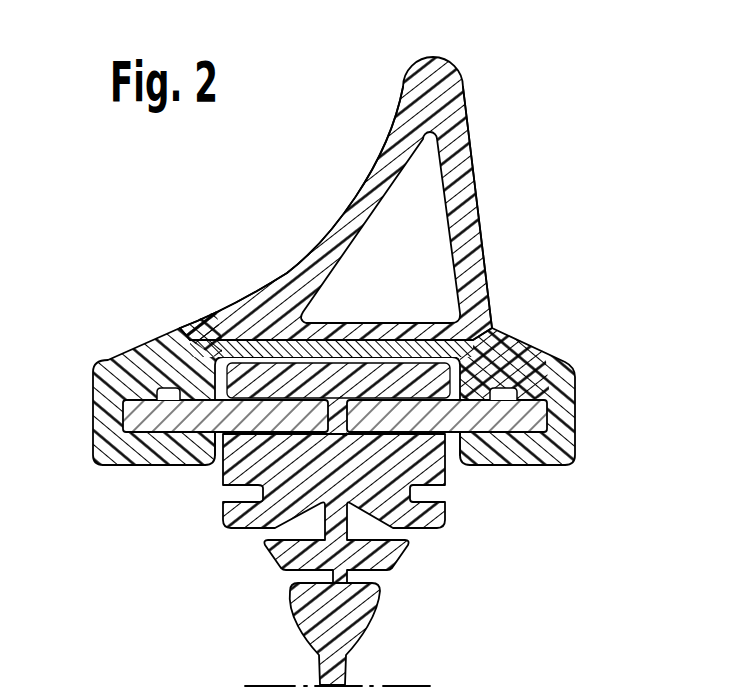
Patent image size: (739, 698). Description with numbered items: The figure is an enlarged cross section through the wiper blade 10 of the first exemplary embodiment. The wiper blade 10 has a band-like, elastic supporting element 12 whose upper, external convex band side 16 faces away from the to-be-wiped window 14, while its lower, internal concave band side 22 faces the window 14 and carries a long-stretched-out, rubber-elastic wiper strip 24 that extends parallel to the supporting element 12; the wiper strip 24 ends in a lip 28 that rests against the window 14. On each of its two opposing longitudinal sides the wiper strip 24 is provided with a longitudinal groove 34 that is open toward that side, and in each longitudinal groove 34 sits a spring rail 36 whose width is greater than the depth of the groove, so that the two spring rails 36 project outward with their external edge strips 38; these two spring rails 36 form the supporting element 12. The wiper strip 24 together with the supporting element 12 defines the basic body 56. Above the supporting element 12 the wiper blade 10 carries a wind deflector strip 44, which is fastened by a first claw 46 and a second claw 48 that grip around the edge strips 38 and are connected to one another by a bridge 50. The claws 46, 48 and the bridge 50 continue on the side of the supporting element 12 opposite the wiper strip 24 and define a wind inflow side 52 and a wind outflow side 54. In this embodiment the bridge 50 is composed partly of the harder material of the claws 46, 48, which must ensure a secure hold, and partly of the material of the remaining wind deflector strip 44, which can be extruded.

The wiper blade 10 is at (498, 482).
The supporting element 12 is at (553, 360).
The window 14 is at (400, 685).
The external convex band side 16 is at (133, 355).
The internal concave band side 22 is at (143, 424).
The wiper strip 24 is at (229, 549).
The wiper lip 28 is at (338, 637).
The longitudinal grooves 34 is at (187, 330).
The spring rail 36 is at (220, 418).
The edge strips 38 is at (110, 463).
The wind deflector strip 44 is at (433, 82).
The first claw 46 is at (107, 423).
The second claw 48 is at (550, 383).
The bridge 50 is at (418, 302).
The wind inflow side 52 is at (353, 210).
The wind outflow side 54 is at (474, 163).
The basic body 56 is at (166, 548).